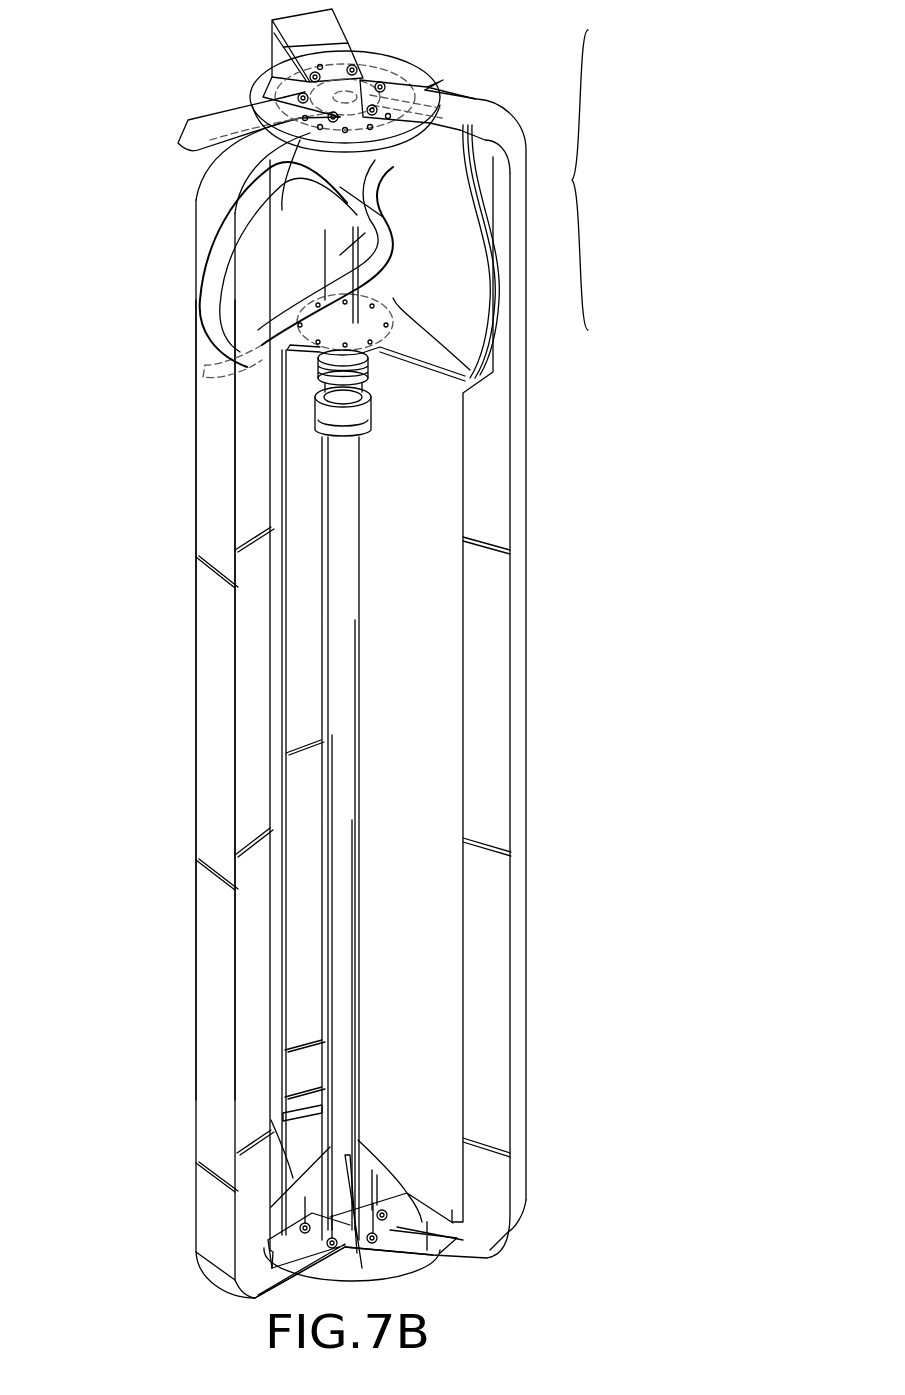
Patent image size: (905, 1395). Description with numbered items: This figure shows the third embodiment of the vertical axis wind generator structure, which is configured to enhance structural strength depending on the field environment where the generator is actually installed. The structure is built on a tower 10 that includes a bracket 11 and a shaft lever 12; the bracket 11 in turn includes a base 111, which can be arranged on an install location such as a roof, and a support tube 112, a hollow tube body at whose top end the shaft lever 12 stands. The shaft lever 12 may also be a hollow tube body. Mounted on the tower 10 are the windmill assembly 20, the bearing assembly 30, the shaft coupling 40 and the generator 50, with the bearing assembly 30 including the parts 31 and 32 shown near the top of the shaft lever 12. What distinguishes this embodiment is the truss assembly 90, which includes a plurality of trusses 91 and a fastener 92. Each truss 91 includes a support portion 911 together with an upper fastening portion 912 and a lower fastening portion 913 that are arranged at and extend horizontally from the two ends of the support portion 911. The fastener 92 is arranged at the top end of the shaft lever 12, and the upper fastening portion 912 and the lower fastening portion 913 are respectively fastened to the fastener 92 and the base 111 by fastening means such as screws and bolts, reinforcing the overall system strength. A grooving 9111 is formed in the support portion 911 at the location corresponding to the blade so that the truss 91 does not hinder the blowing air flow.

The tower 10 is at (392, 682).
The bracket 11 is at (322, 1080).
The base 111 is at (285, 1230).
The support tube 112 is at (335, 1112).
The shaft lever 12 is at (345, 97).
The windmill assembly 20 is at (327, 272).
The bearing assembly 30 is at (599, 180).
The mounting flange 31 is at (382, 108).
The lower mounting plate 32 is at (390, 313).
The shaft coupling 40 is at (317, 373).
The generator 50 is at (363, 417).
The truss assembly 90 is at (262, 42).
The truss 91 is at (185, 275).
The support portion 911 is at (253, 513).
The grooving 9111 is at (262, 298).
The upper fastening portion 912 is at (262, 104).
The lower fastening portion 913 is at (448, 1250).
The fastener 92 is at (280, 90).